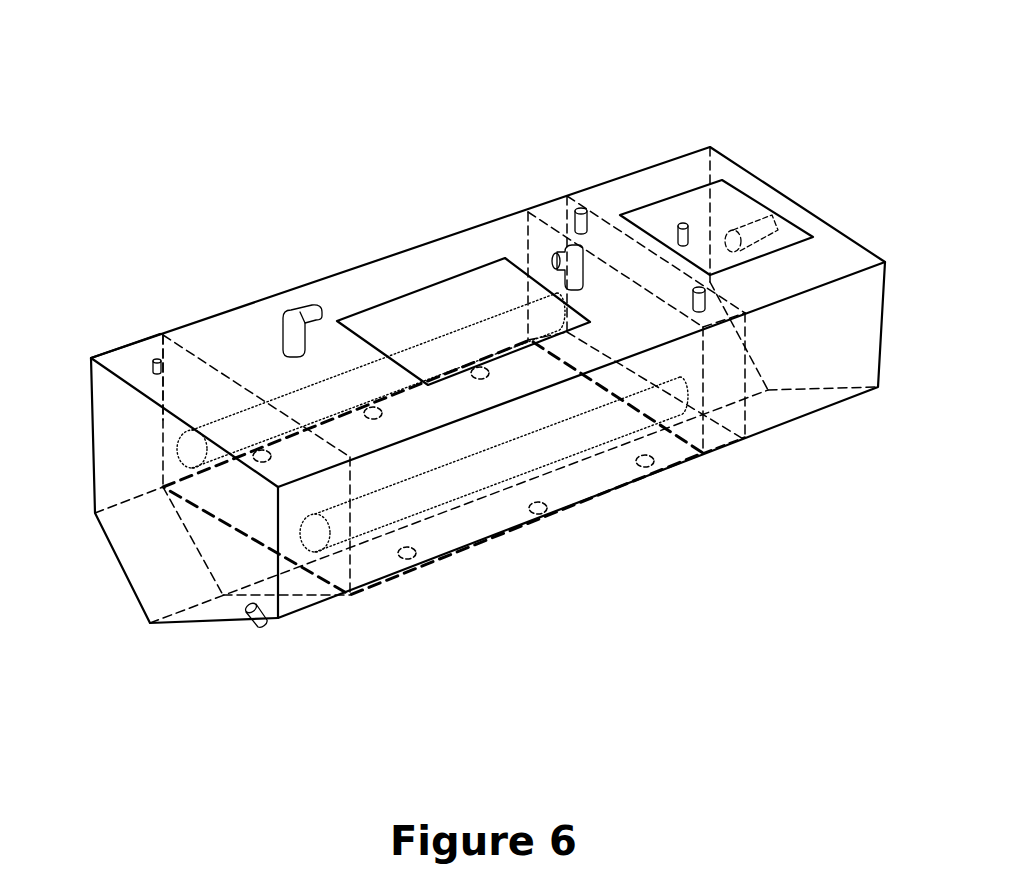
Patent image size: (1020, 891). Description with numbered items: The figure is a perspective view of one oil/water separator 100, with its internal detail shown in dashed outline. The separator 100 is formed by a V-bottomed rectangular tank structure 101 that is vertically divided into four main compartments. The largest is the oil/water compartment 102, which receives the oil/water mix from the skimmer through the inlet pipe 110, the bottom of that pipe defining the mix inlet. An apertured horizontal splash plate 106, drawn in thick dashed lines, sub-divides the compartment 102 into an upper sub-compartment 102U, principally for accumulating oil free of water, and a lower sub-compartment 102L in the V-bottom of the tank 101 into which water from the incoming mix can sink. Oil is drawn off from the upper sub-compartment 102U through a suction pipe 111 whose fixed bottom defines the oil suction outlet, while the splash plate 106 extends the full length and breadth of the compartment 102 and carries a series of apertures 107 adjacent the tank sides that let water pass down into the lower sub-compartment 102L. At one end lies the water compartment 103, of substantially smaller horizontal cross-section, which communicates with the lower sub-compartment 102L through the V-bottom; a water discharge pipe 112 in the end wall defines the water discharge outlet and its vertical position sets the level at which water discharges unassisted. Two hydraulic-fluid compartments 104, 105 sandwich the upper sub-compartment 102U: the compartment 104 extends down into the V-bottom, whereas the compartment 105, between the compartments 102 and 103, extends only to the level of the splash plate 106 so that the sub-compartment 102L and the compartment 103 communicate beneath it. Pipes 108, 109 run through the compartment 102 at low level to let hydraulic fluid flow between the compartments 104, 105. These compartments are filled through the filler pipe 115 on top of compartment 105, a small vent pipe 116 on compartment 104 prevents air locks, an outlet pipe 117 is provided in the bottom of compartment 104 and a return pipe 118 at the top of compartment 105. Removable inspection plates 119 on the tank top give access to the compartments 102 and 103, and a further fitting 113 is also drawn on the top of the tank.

The separator 100 is at (397, 112).
The tank structure 101 is at (813, 413).
The oil/water compartment 102 is at (331, 243).
The upper sub-compartment 102U is at (240, 492).
The lower sub-compartment 102L is at (240, 555).
The water compartment 103 is at (630, 145).
The hydraulic-fluid compartment 104 is at (118, 338).
The hydraulic-fluid compartment 105 is at (545, 193).
The splash plate 106 is at (453, 517).
The apertures 107 is at (273, 455).
The pipe 108 is at (549, 465).
The pipe 109 is at (392, 397).
The inlet pipe 110 is at (567, 248).
The suction pipe 111 is at (310, 312).
The water discharge pipe 112 is at (750, 223).
The port 113 is at (683, 222).
The filler pipe 115 is at (587, 210).
The vent pipe 116 is at (152, 367).
The outlet pipe 117 is at (255, 632).
The return pipe 118 is at (705, 288).
The inspection plates 119 is at (470, 295).